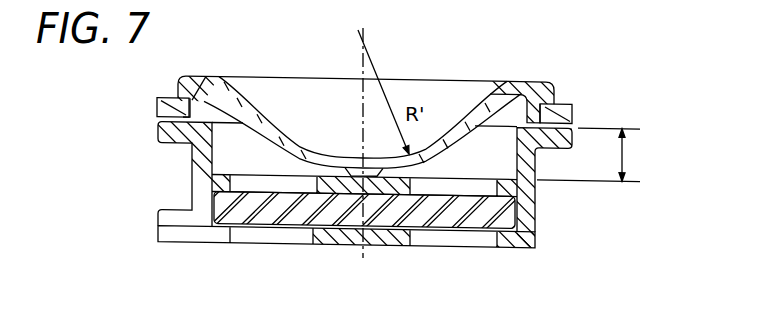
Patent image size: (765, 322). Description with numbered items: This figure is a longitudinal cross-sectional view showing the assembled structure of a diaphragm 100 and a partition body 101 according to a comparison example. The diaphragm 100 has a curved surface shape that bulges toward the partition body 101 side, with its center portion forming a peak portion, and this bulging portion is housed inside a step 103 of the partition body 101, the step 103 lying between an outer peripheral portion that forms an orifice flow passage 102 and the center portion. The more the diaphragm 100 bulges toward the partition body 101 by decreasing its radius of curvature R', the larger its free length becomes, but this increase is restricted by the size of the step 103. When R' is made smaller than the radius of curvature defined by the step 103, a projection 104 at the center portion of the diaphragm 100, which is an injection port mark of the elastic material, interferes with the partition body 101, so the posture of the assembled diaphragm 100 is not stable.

The diaphragm 100 is at (476, 88).
The partition body 101 is at (415, 247).
The orifice flow passage 102 is at (190, 187).
The step 103 is at (632, 157).
The projection 104 is at (342, 192).